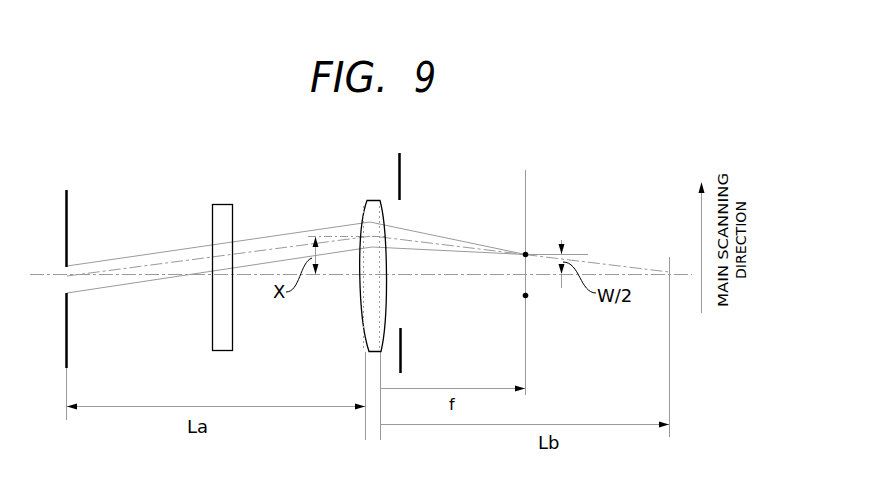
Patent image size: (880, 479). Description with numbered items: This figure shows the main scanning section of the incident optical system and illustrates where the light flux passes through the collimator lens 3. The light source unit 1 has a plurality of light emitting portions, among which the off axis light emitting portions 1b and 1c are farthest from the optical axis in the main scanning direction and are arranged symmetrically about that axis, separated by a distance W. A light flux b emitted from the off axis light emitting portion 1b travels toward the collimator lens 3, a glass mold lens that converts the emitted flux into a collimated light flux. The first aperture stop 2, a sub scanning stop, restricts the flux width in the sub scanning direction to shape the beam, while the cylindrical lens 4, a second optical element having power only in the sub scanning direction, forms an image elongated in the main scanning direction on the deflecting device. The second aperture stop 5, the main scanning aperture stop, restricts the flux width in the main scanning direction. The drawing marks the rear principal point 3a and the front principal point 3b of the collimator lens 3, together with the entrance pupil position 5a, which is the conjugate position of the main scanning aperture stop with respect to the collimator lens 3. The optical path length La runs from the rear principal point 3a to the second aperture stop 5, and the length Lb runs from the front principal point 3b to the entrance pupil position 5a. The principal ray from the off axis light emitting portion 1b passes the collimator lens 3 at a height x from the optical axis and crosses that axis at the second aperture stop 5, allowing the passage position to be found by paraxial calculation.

The light source unit 1 is at (526, 187).
The off axis light emitting portion 1b is at (527, 254).
The off axis light emitting portion 1c is at (527, 296).
The first aperture stop 2 is at (401, 172).
The collimator lens 3 is at (362, 212).
The rear principal point 3a is at (362, 296).
The front principal point 3b is at (388, 296).
The cylindrical lens 4 is at (222, 204).
The second aperture stop 5 is at (67, 201).
The entrance pupil position 5a is at (670, 257).